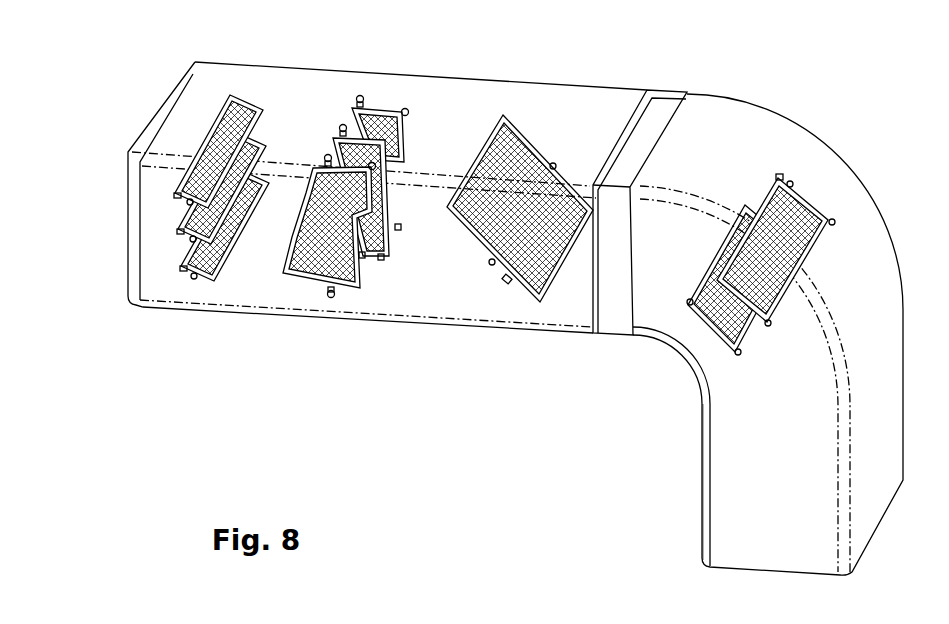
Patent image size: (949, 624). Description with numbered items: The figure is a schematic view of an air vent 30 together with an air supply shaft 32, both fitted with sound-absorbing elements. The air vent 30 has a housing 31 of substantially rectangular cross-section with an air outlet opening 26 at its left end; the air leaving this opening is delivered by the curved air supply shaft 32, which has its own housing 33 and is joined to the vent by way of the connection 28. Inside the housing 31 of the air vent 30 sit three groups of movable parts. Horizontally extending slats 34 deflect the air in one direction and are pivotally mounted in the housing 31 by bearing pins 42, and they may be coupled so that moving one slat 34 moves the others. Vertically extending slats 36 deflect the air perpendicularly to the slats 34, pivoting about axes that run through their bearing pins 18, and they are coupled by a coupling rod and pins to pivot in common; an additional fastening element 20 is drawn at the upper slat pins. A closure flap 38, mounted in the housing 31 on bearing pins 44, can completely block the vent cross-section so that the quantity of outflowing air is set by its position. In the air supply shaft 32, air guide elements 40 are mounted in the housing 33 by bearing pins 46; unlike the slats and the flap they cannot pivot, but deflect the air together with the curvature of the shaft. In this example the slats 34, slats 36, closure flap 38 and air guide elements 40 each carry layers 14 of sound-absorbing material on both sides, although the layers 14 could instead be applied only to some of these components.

The layer of sound-absorbing material 14 is at (253, 178).
The bearing pin 18 is at (328, 154).
The fastening element 20 is at (374, 163).
The air outlet opening 26 is at (118, 241).
The connection 28 is at (612, 318).
The air vent 30 is at (163, 347).
The housing 31 is at (252, 295).
The air supply shaft 32 is at (693, 521).
The housing 33 is at (725, 433).
The horizontally extending slat 34 is at (160, 215).
The vertically extending slat 36 is at (398, 230).
The closure flap 38 is at (507, 284).
The air guide element 40 is at (778, 176).
The bearing pin 42 is at (191, 280).
The bearing pin 44 is at (552, 163).
The bearing pin 46 is at (790, 181).